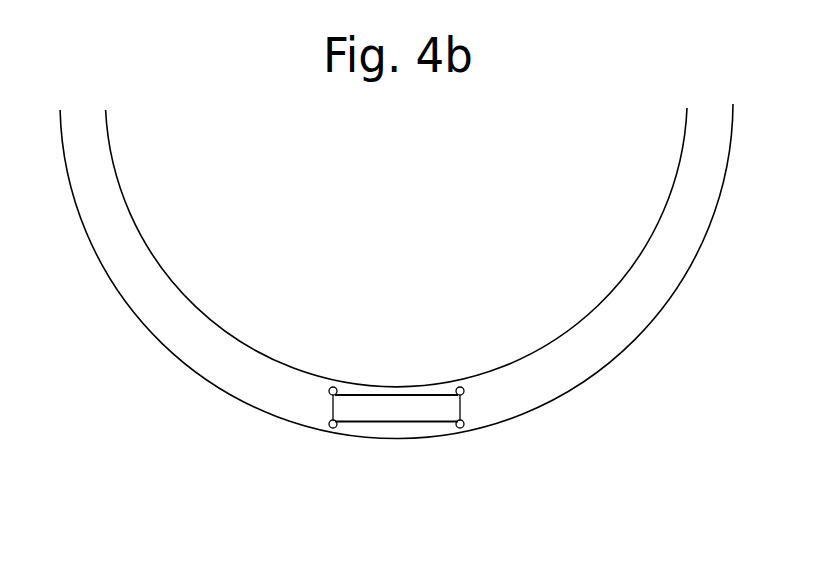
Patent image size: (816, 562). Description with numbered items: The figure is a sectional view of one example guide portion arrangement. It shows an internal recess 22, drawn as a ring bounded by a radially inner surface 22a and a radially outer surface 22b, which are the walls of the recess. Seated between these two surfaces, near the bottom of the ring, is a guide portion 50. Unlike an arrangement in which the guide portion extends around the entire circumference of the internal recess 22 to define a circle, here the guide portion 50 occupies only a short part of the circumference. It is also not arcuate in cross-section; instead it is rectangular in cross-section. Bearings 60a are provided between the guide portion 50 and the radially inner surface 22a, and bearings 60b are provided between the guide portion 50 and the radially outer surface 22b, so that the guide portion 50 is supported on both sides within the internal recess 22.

The internal recess 22 is at (396, 289).
The radially inner surface of the internal recess 22a is at (567, 336).
The radially outer surface of the internal recess 22b is at (570, 389).
The guide portion 50 is at (414, 412).
The bearings 60a is at (335, 387).
The bearings 60b is at (333, 428).